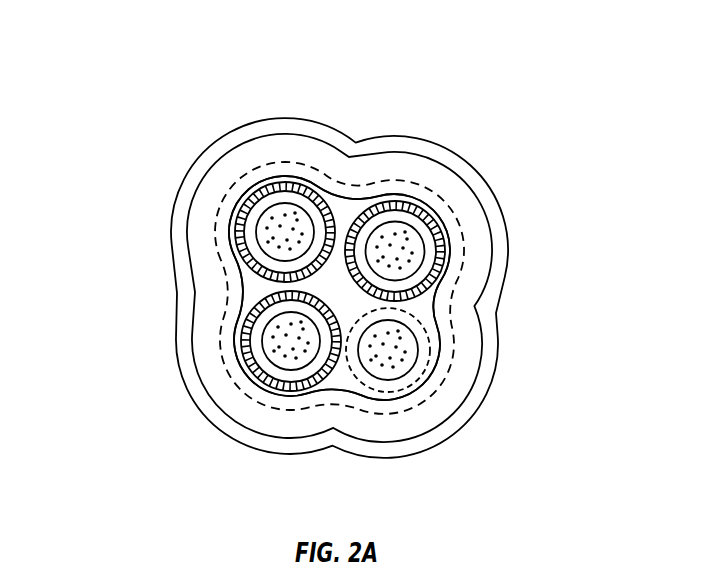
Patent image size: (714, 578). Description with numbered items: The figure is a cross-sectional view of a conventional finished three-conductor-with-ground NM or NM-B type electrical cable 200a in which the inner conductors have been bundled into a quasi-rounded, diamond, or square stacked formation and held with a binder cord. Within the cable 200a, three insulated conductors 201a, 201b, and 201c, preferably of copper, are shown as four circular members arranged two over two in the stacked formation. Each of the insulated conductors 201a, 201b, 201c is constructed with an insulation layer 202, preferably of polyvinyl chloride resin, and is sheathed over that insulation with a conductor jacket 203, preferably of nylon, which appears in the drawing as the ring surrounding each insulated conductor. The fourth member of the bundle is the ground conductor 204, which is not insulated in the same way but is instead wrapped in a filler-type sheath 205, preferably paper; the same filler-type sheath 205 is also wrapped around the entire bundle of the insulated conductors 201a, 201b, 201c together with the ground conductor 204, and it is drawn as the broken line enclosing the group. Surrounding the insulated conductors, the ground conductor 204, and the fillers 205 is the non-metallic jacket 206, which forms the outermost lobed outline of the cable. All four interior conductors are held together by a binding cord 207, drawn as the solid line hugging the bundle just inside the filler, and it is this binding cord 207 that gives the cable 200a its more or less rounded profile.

The electrical cable 200a is at (151, 36).
The insulated conductor 201a is at (470, 212).
The insulated conductor 201b is at (275, 241).
The insulated conductor 201c is at (277, 345).
The insulation layer 202 is at (435, 212).
The conductor jacket 203 is at (340, 317).
The ground conductor 204 is at (405, 370).
The filler-type sheath 205 is at (348, 195).
The non-metallic jacket 206 is at (360, 460).
The binding cord 207 is at (337, 392).